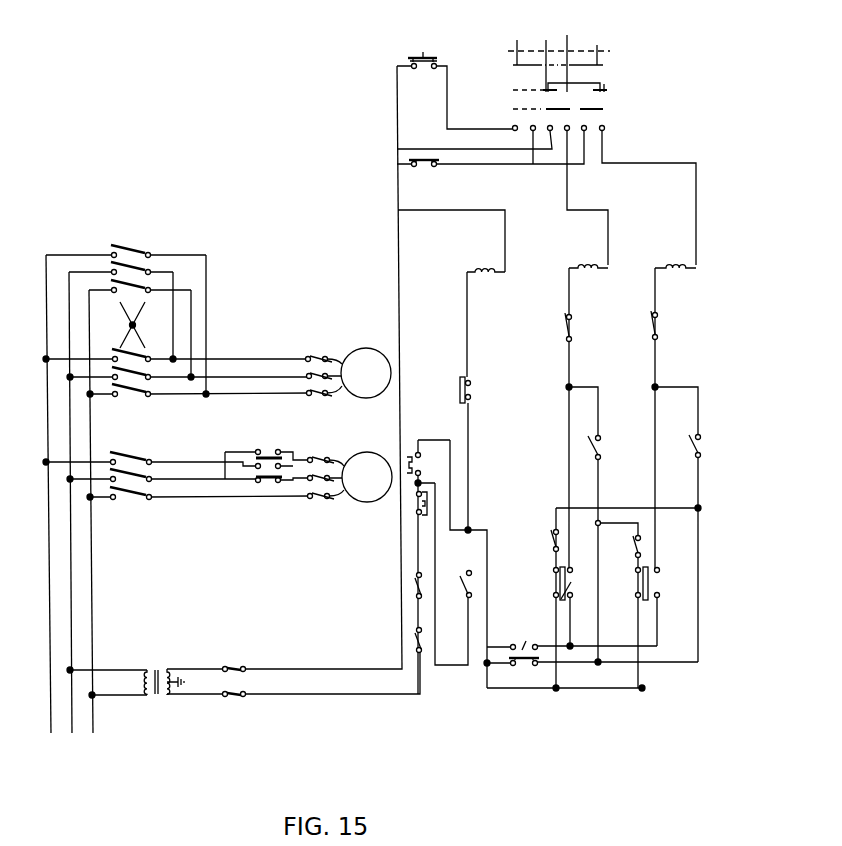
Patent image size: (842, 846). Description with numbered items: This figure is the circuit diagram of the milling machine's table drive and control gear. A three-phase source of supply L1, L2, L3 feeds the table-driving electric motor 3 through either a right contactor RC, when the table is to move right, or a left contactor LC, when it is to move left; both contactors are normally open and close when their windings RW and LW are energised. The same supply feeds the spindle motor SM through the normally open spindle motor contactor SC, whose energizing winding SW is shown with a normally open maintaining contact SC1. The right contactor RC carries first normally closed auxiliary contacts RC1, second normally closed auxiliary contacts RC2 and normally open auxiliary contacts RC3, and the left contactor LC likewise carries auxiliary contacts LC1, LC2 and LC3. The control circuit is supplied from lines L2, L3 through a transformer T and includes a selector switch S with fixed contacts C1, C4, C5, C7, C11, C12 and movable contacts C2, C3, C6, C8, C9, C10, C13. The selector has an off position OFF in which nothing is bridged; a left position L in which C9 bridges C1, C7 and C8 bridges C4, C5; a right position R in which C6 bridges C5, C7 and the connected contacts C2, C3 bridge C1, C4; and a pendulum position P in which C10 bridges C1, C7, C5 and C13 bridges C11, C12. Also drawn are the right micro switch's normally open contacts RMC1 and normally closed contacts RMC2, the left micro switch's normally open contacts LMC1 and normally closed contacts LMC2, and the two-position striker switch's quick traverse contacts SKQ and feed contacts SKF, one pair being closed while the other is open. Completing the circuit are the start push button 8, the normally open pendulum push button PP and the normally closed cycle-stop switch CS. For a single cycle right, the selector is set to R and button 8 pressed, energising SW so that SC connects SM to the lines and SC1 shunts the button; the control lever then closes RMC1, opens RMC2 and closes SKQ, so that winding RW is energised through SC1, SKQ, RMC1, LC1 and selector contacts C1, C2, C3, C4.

The source of supply line L1 is at (50, 505).
The source of supply line L2 is at (72, 521).
The source of supply line L3 is at (95, 523).
The right contactor RC is at (128, 247).
The left contactor LC is at (132, 400).
The spindle motor contactor SC is at (129, 501).
The electric motor 3 is at (363, 357).
The spindle motor SM is at (367, 490).
The transformer T is at (156, 697).
The pendulum push button PP is at (423, 50).
The cycle-stop switch CS is at (420, 171).
The start push button 8 is at (407, 453).
The energizing winding of spindle motor contactor SW is at (486, 259).
The left contactor winding LW is at (588, 256).
The right contactor winding RW is at (675, 256).
The maintaining contact SC1 is at (454, 590).
The first normally closed auxiliary contacts of right contactor RC1 is at (567, 326).
The first normally closed auxiliary contacts of left contactor LC1 is at (653, 324).
The normally open auxiliary contacts of left contactor LC3 is at (596, 447).
The normally open auxiliary contacts of right contactor RC3 is at (695, 450).
The second normally closed auxiliary contacts of left contactor LC2 is at (552, 541).
The second normally closed auxiliary contacts of right contactor RC2 is at (635, 548).
The normally closed contacts of left micro switch LMC2 is at (558, 584).
The normally open contacts of left micro switch LMC1 is at (560, 600).
The normally closed contacts of right micro switch RMC2 is at (641, 584).
The normally open contacts of right micro switch RMC1 is at (653, 584).
The quick traverse contacts SKQ is at (523, 639).
The feed contacts SKF is at (523, 672).
The fixed contact of selector switch C1 is at (603, 131).
The movable contact of selector switch C2 is at (605, 86).
The movable contact of selector switch C3 is at (541, 60).
The fixed contact of selector switch C4 is at (551, 131).
The fixed contact of selector switch C5 is at (568, 131).
The movable contact of selector switch C6 is at (562, 53).
The fixed contact of selector switch C7 is at (585, 131).
The movable contact of selector switch C8 is at (547, 112).
The movable contact of selector switch C9 is at (633, 122).
The movable contact of selector switch C10 is at (596, 47).
The fixed contact of selector switch C11 is at (532, 131).
The fixed contact of selector switch C12 is at (514, 131).
The movable contact of selector switch C13 is at (509, 41).
The selector switch S is at (587, 91).
The off position OFF is at (542, 52).
The pendulum position P is at (543, 69).
The right position R is at (547, 92).
The left position L is at (545, 117).